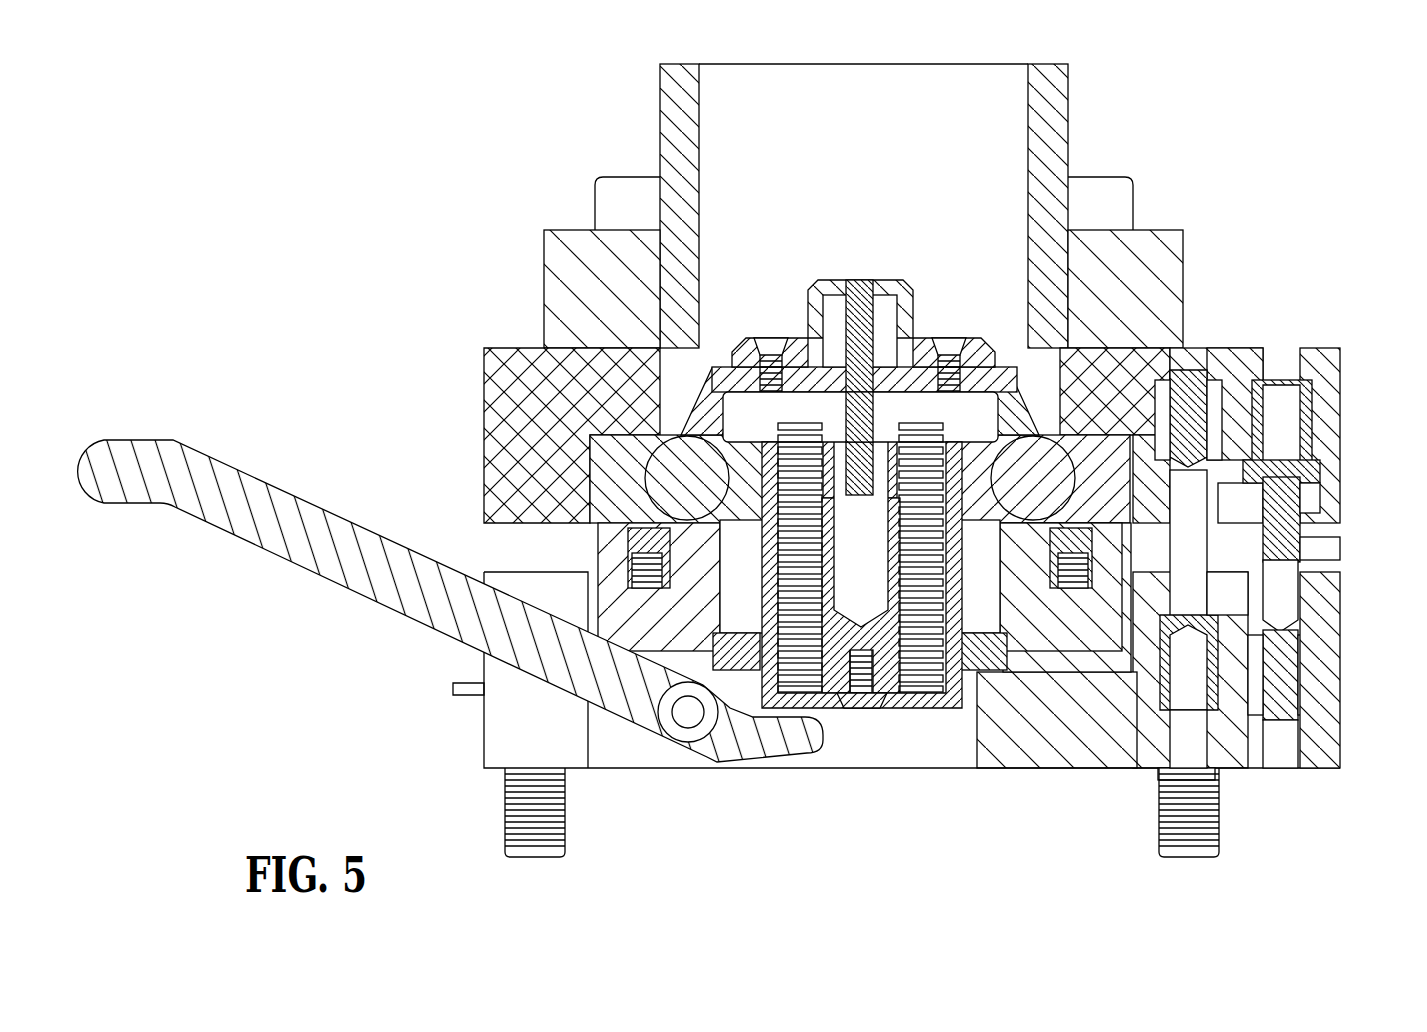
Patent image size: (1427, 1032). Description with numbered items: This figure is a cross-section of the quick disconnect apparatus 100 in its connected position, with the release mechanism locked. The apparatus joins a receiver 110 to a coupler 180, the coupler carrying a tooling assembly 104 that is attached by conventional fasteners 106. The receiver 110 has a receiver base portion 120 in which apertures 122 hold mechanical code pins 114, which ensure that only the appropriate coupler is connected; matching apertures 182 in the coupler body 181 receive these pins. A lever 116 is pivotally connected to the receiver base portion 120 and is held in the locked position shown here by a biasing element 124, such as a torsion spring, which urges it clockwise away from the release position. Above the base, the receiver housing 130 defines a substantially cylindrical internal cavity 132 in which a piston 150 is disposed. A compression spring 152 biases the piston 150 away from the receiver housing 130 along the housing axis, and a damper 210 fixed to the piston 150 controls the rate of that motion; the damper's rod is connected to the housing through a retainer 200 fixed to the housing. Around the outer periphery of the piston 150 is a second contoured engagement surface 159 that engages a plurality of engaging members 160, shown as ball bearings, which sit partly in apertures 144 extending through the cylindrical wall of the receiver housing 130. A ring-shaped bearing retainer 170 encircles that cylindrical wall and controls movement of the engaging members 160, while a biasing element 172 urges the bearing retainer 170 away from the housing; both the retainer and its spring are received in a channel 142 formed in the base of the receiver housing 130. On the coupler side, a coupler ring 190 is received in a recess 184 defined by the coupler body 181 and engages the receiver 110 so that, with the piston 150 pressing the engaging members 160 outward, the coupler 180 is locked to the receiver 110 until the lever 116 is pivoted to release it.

The quick disconnect apparatus 100 is at (747, 457).
The tooling assembly 104 is at (1066, 118).
The fasteners 106 is at (1126, 207).
The receiver 110 is at (450, 578).
The mechanical code pins 114 is at (1320, 503).
The lever 116 is at (117, 447).
The receiver base portion 120 is at (500, 578).
The apertures 122 is at (1320, 592).
The biasing element 124 is at (688, 716).
The receiver housing 130 is at (1017, 346).
The internal cavity 132 is at (830, 706).
The channel 142 is at (628, 557).
The apertures 144 is at (812, 406).
The piston 150 is at (950, 708).
The compression spring 152 is at (905, 698).
The second contoured engagement surface 159 is at (765, 548).
The engaging members 160 is at (706, 489).
The bearing retainer 170 is at (645, 545).
The biasing element 172 is at (630, 578).
The coupler 180 is at (1285, 510).
The coupler body 181 is at (1318, 348).
The apertures 182 is at (1313, 495).
The recess 184 is at (592, 446).
The coupler ring 190 is at (594, 482).
The retainer 200 is at (898, 280).
The damper 210 is at (781, 344).